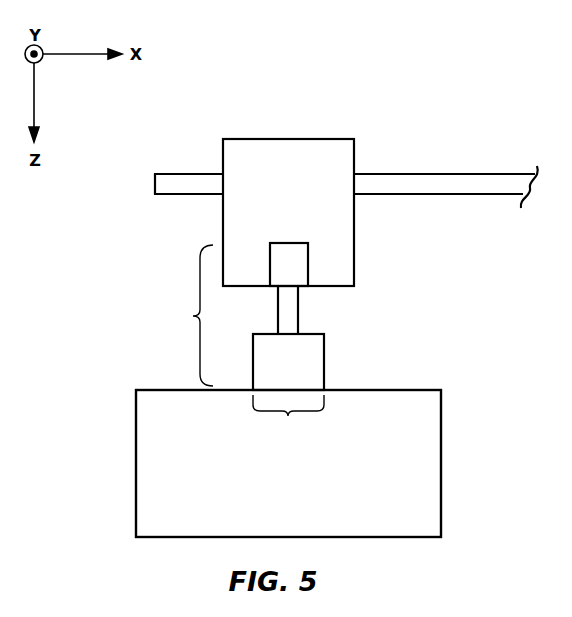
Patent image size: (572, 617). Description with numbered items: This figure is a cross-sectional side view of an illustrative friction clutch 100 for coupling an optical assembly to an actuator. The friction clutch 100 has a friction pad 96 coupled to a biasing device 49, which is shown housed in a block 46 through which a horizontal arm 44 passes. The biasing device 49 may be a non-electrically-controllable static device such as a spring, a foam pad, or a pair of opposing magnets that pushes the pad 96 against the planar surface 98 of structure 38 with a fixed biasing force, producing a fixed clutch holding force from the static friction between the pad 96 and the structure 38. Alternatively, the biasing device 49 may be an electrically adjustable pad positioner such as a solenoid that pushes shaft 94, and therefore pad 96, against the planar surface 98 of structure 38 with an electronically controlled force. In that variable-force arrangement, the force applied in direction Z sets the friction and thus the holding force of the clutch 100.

The structure 38 is at (432, 462).
The arm / shaft 44 is at (437, 181).
The head assembly housing 46 is at (290, 148).
The biasing device 49 is at (309, 259).
The shaft 94 is at (297, 308).
The friction pad 96 is at (323, 358).
The planar surface 98 is at (288, 419).
The friction clutch 100 is at (183, 315).